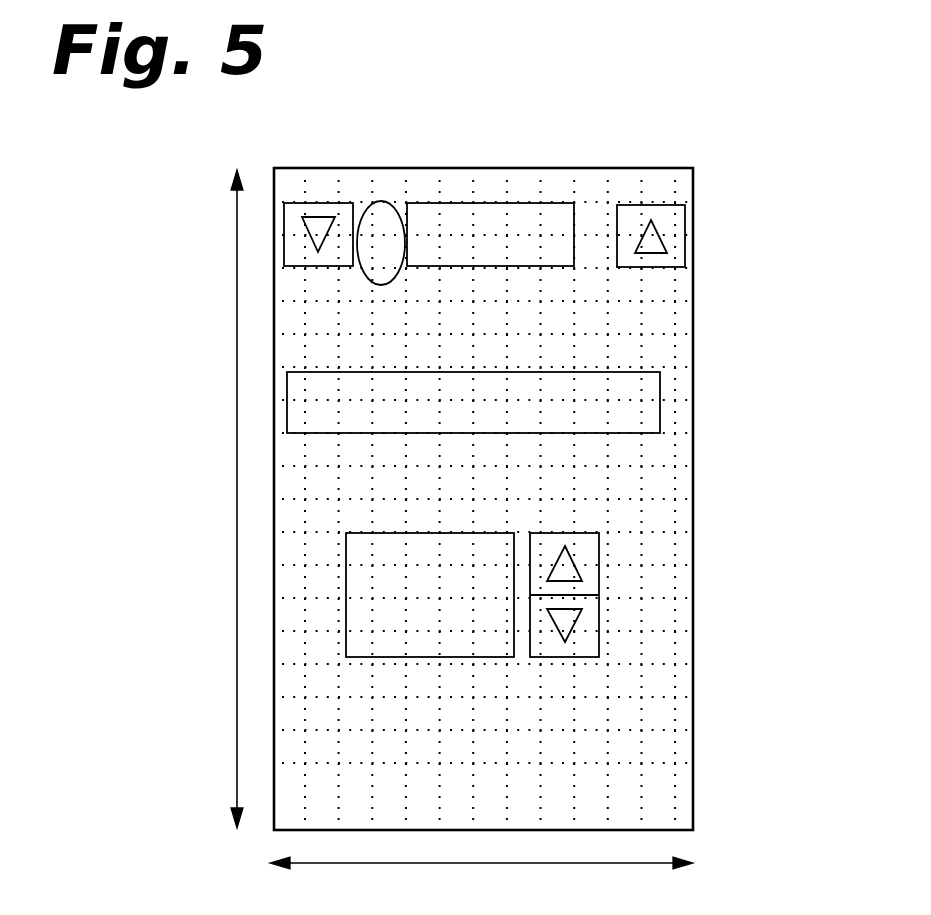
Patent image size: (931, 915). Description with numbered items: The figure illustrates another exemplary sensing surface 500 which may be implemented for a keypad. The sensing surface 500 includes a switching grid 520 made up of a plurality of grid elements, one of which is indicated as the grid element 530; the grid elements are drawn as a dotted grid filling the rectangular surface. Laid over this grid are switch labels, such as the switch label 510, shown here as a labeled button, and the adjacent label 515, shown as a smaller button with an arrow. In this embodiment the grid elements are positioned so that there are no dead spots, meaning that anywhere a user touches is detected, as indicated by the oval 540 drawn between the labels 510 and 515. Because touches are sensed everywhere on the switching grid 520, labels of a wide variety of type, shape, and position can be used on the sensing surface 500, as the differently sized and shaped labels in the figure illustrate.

The sensing surface 500 is at (152, 263).
The switch label 510 is at (505, 203).
The label 515 is at (315, 202).
The switching grid 520 is at (693, 368).
The grid element 530 is at (677, 330).
The oval 540 is at (385, 202).